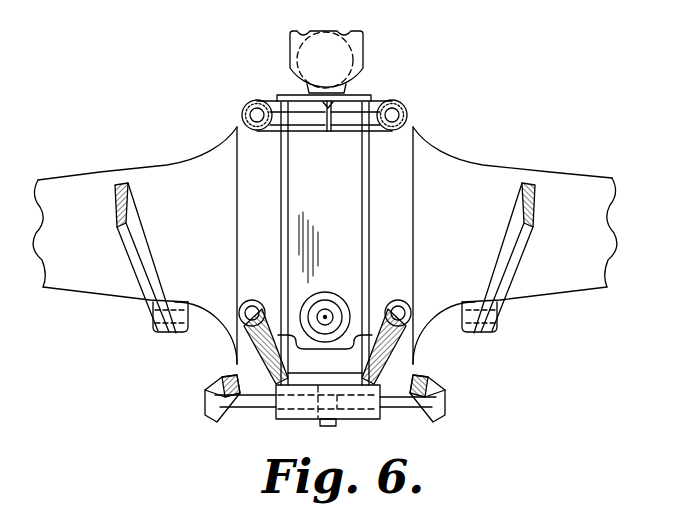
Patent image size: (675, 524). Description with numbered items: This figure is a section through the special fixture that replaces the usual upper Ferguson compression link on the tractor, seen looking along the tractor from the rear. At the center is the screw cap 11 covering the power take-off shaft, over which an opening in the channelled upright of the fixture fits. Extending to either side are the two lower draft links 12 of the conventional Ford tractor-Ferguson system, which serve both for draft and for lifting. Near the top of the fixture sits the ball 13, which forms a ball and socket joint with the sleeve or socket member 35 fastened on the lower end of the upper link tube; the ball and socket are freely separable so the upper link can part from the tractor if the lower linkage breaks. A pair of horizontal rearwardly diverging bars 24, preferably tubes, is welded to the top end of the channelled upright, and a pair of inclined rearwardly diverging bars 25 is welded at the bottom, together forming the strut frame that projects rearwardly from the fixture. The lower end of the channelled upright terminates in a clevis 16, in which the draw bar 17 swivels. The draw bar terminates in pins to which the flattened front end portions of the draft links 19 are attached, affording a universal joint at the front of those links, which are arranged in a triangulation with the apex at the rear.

The screw cap 11 is at (337, 304).
The lower draft links 12 is at (150, 267).
The ball 13 is at (344, 91).
The clevis 16 is at (284, 424).
The draw bar 17 is at (407, 404).
The draft links 19 is at (224, 386).
The horizontal rearwardly diverging bars 24 is at (272, 102).
The inclined rearwardly diverging bars 25 is at (263, 324).
The sleeve or socket member 35 is at (356, 46).